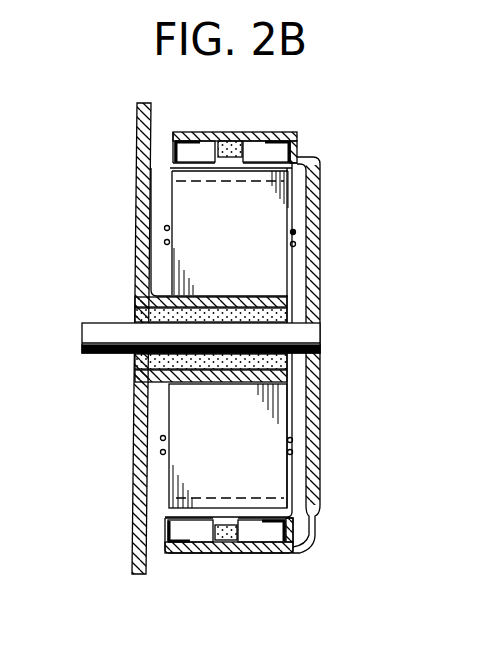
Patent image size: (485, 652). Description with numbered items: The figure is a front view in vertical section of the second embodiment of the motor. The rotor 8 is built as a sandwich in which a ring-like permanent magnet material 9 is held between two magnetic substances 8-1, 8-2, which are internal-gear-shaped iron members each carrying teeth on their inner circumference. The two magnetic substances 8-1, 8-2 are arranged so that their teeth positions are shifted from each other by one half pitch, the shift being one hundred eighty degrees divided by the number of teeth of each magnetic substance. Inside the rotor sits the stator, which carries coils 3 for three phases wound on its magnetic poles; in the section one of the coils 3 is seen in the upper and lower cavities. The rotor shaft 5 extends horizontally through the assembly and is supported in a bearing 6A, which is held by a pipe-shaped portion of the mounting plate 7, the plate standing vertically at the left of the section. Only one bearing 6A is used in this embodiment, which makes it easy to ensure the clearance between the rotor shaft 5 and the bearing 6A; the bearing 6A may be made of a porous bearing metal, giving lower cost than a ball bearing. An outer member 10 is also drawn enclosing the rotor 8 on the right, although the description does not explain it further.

The coil 3 is at (295, 232).
The rotor shaft 5 is at (321, 332).
The bearing 6A is at (134, 362).
The mounting plate 7 is at (137, 190).
The rotor 8 is at (272, 555).
The magnetic substance 8-1 is at (183, 148).
The magnetic substance 8-2 is at (297, 145).
The permanent magnet material 9 is at (233, 145).
The outer cover 10 is at (320, 187).